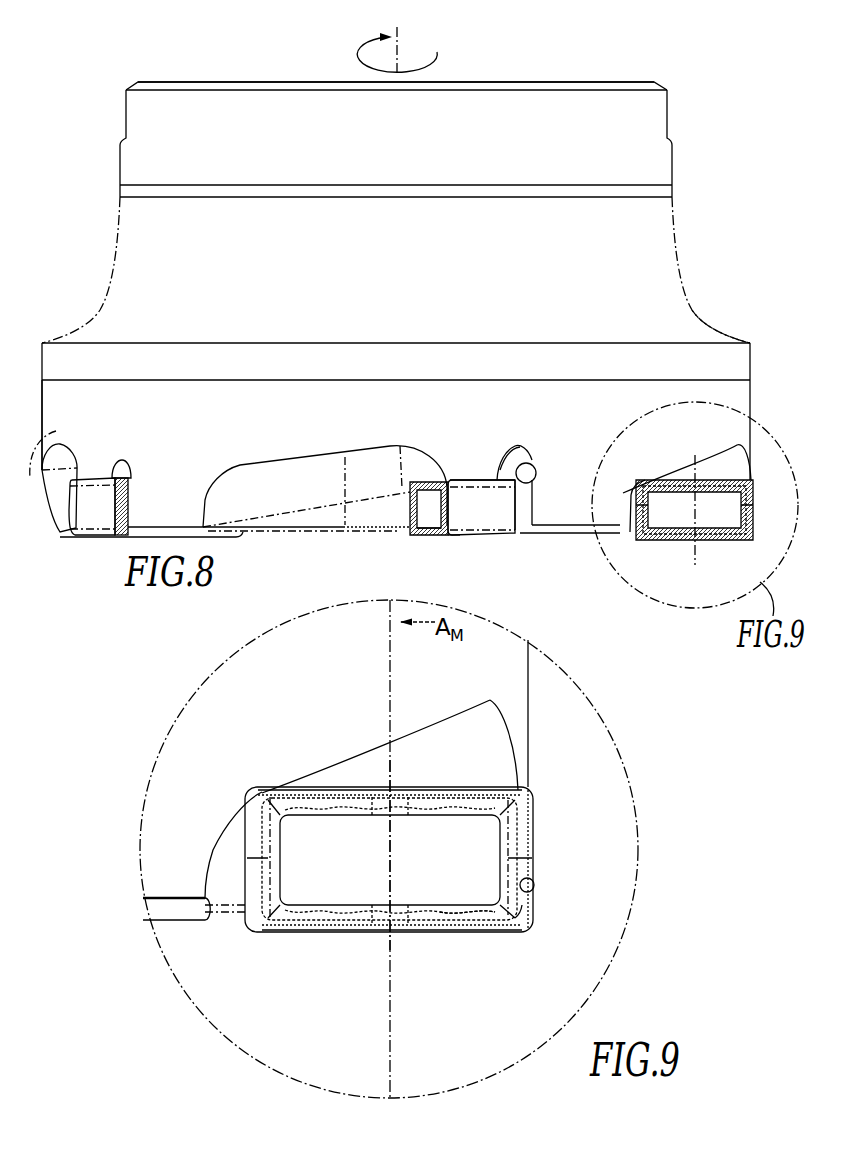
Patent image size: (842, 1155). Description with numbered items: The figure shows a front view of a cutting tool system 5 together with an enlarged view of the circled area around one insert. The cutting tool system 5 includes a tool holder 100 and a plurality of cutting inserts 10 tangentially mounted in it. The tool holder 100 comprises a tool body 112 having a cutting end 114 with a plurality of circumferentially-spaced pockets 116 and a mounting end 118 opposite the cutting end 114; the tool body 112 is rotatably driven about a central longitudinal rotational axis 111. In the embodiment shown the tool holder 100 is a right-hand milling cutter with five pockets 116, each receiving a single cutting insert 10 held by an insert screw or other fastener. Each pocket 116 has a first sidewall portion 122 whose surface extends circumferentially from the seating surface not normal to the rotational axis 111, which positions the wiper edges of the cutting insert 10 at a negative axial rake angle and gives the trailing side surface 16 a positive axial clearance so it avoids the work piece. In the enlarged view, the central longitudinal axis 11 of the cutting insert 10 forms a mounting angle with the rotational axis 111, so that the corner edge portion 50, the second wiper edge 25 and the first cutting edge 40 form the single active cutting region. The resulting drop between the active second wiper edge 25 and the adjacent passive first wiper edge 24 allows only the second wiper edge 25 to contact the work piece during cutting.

In FIG. 8, the cutting tool system 5 is at (113, 72).
In FIG. 9, the cutting tool system 5 is at (127, 730).
In FIG. 8, the cutting insert 10 is at (98, 545).
In FIG. 9, the cutting insert 10 is at (349, 945).
In FIG. 8, the central longitudinal axis 11 is at (703, 552).
In FIG. 9, the central longitudinal axis 11 is at (395, 704).
In FIG. 8, the side surface 16 is at (452, 540).
In FIG. 9, the first wiper edge 24 is at (285, 930).
In FIG. 8, the second wiper edge 25 is at (428, 541).
In FIG. 9, the second wiper edge 25 is at (483, 925).
In FIG. 9, the first cutting edge 40 is at (530, 890).
In FIG. 9, the corner edge portion 50 is at (525, 918).
In FIG. 8, the tool holder 100 is at (110, 282).
In FIG. 8, the central longitudinal rotational axis 111 is at (399, 41).
In FIG. 9, the central longitudinal rotational axis 111 is at (388, 707).
In FIG. 8, the tool body 112 is at (712, 325).
In FIG. 8, the cutting end 114 is at (46, 481).
In FIG. 8, the pocket 116 is at (471, 478).
In FIG. 9, the pocket 116 is at (485, 722).
In FIG. 8, the mounting end 118 is at (652, 117).
In FIG. 8, the first sidewall portion 122 is at (504, 460).